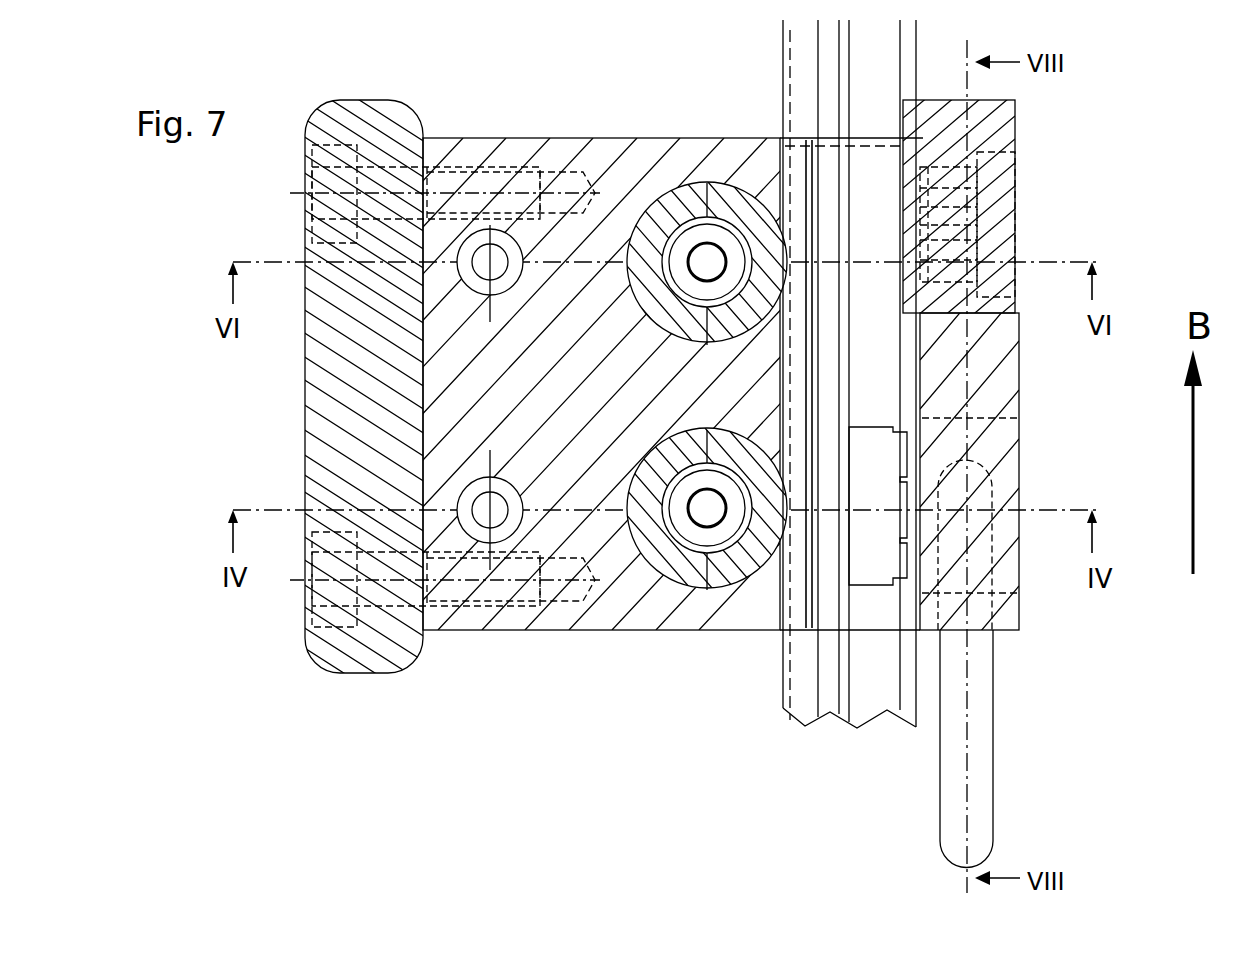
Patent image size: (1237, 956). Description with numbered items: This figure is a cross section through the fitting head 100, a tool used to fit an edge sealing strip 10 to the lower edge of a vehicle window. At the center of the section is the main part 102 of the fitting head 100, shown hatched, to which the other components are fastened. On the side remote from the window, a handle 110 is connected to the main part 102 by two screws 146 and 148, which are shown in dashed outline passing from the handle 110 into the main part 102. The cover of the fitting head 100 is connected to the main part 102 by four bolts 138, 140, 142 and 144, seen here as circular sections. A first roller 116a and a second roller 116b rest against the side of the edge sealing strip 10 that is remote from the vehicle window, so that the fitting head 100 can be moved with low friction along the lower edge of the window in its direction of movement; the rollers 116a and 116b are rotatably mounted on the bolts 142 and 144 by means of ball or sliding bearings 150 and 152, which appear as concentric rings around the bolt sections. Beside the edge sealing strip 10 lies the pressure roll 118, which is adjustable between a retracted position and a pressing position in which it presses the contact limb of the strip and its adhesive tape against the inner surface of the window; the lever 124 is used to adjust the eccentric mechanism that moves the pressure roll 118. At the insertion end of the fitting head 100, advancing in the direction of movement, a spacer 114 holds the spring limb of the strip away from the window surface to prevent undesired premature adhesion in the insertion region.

The edge sealing strip 10 is at (781, 725).
The fitting head 100 is at (489, 707).
The main part 102 is at (640, 622).
The handle 110 is at (305, 365).
The spacer 114 is at (1013, 137).
The first roller 116a is at (684, 187).
The second roller 116b is at (728, 578).
The pressure roll 118 is at (878, 577).
The lever 124 is at (994, 756).
The bolt 138 is at (504, 490).
The bolt 140 is at (505, 285).
The bolt 142 is at (688, 271).
The bolt 144 is at (682, 446).
The screw 146 is at (487, 597).
The screw 148 is at (500, 167).
The ball or sliding bearing 150 is at (722, 221).
The ball or sliding bearing 152 is at (697, 547).